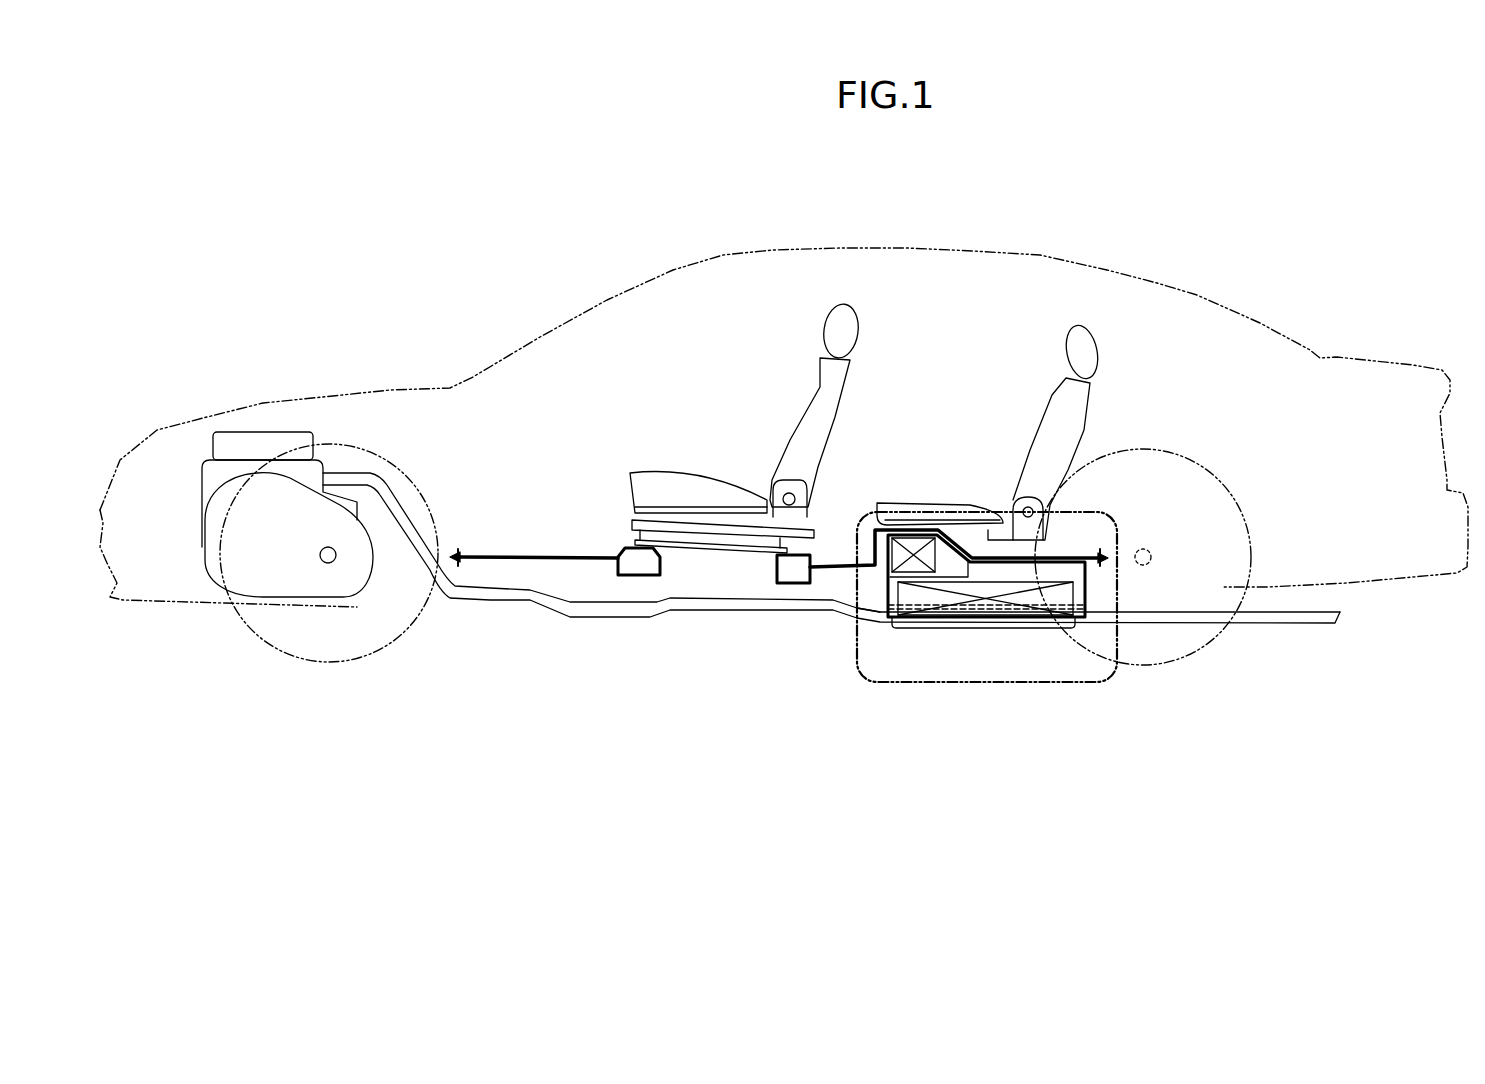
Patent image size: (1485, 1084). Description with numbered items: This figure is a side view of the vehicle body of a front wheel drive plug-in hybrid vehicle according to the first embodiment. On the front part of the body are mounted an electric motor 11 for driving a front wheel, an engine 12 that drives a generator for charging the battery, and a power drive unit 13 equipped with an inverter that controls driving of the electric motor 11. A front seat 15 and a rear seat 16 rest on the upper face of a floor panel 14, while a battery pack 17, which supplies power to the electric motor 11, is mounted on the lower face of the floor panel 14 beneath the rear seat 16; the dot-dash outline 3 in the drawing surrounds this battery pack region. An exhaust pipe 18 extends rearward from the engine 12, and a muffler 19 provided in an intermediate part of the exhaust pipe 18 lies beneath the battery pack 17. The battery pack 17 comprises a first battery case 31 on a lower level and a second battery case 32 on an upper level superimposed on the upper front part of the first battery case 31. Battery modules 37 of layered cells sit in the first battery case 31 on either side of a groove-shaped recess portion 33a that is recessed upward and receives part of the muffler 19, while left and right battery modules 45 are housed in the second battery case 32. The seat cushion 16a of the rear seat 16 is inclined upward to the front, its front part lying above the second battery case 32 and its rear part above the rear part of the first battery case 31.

The battery pack 3 is at (1005, 685).
The electric motor 11 is at (253, 535).
The engine 12 is at (213, 482).
The power drive unit 13 is at (263, 442).
The floor panel 14 is at (843, 550).
The front seat 15 is at (761, 446).
The rear seat 16 is at (1021, 436).
The seat cushion 16a is at (937, 510).
The battery pack 17 is at (878, 575).
The exhaust pipe 18 is at (738, 605).
The muffler 19 is at (990, 628).
The first battery case 31 is at (1088, 598).
The second battery case 32 is at (1088, 568).
The recess portion 33a is at (1002, 607).
The battery module 37 is at (973, 590).
The battery module 45 is at (913, 545).